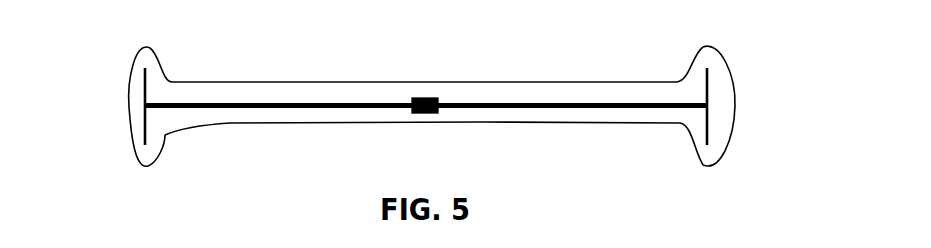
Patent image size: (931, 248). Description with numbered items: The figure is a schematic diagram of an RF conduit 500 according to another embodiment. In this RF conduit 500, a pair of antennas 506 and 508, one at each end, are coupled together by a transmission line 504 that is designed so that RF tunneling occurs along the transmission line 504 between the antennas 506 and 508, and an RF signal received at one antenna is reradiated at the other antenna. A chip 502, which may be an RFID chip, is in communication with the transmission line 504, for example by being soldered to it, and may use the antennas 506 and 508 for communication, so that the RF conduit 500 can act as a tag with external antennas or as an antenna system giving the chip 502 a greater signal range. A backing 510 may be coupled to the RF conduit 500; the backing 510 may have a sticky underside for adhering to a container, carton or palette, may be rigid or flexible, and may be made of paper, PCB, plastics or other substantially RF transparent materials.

The RF conduit 500 is at (426, 108).
The chip 502 is at (423, 98).
The transmission line 504 is at (297, 106).
The antenna 506 is at (145, 132).
The antenna 508 is at (707, 122).
The backing 510 is at (610, 88).